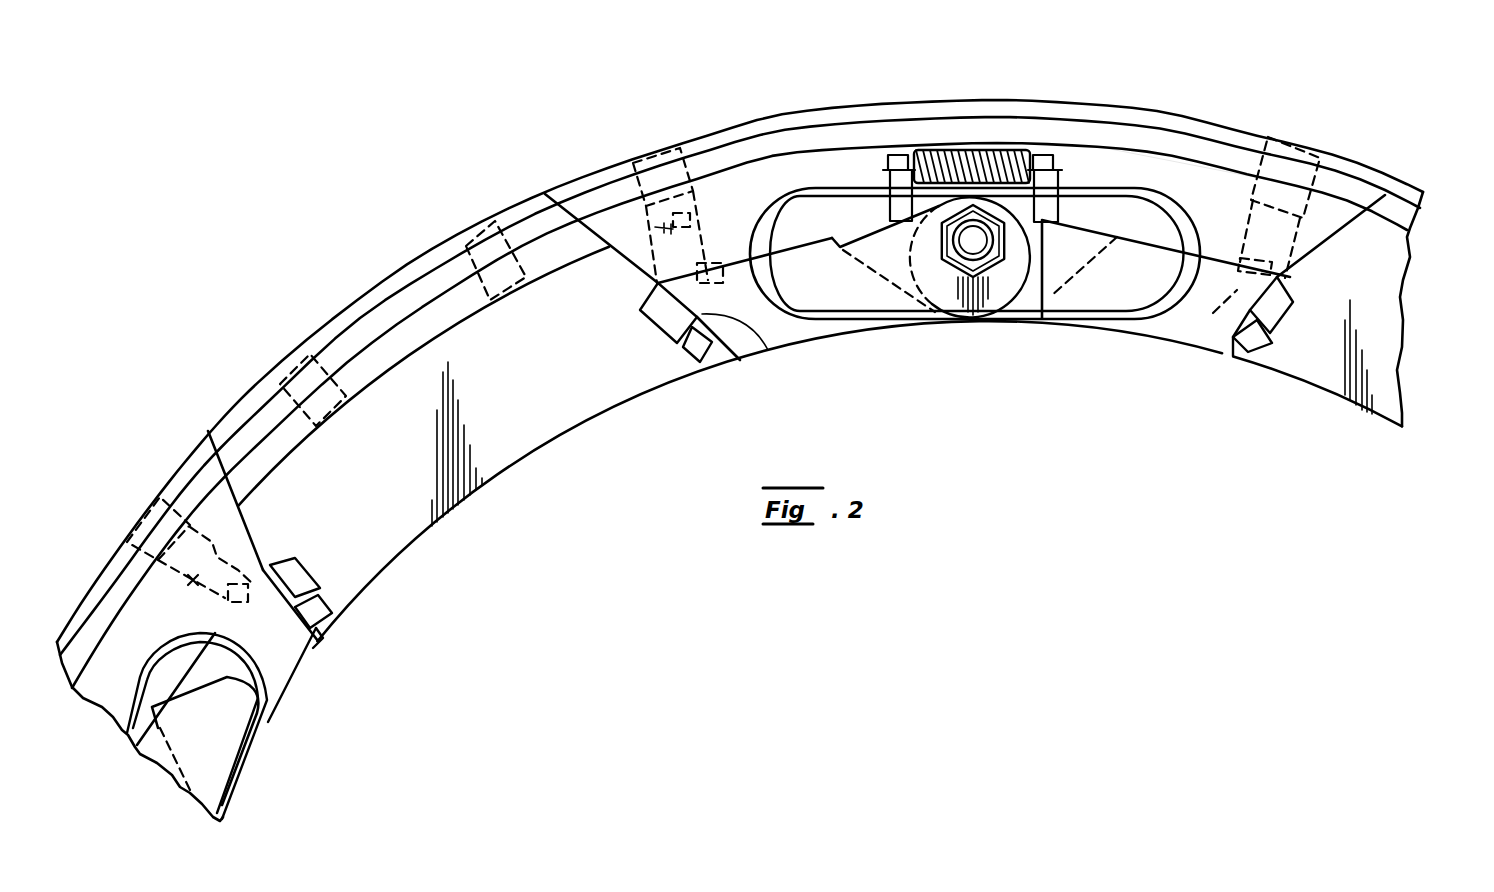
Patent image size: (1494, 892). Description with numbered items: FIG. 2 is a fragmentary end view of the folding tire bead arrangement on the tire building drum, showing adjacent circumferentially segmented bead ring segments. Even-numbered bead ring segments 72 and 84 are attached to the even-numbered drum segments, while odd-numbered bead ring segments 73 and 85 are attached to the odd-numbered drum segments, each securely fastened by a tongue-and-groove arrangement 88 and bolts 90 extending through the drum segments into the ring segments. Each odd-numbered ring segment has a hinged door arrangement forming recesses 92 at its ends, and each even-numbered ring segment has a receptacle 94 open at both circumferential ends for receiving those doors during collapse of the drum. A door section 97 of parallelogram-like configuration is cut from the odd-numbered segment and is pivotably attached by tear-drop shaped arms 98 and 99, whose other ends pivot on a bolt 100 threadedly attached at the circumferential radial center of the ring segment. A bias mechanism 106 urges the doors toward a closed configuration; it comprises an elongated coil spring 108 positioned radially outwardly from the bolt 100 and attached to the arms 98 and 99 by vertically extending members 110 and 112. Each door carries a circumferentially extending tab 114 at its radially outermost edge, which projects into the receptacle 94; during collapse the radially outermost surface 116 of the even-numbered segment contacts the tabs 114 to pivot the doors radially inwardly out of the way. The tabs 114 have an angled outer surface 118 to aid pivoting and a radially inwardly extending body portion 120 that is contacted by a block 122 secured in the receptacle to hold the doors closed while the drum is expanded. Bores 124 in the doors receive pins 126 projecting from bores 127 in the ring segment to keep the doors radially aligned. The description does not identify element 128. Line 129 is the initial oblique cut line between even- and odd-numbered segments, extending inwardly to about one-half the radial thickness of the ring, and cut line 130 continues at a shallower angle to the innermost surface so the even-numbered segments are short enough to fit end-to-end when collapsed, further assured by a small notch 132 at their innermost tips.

The even-numbered bead ring segment 72 is at (440, 250).
The odd-numbered bead ring segment 73 is at (106, 563).
The even-numbered bead ring segment 84 is at (1428, 193).
The odd-numbered bead ring segment 85 is at (925, 100).
The tongue-and-groove arrangement 88 is at (1128, 124).
The bolts 90 is at (281, 368).
The recesses 92 is at (733, 259).
The receptacle 94 is at (540, 365).
The door section 97 is at (315, 653).
The tear-drop shaped arm 98 is at (866, 303).
The tear-drop shaped arm 99 is at (1073, 297).
The bolt 100 is at (958, 246).
The bias mechanism 106 is at (975, 150).
The coil spring 108 is at (1020, 152).
The vertically extending member 110 is at (900, 183).
The vertically extending member 112 is at (1060, 178).
The tab 114 is at (297, 567).
The radially outermost surface 116 is at (258, 487).
The angled outer surface 118 is at (272, 564).
The body portion 120 is at (311, 588).
The block 122 is at (326, 604).
The bores 124 is at (222, 619).
The pins 126 is at (303, 622).
The bores 127 is at (193, 581).
The sleeve 128 is at (777, 223).
The initial cut line 129 is at (222, 486).
The cut line 130 is at (305, 627).
The notch 132 is at (323, 603).